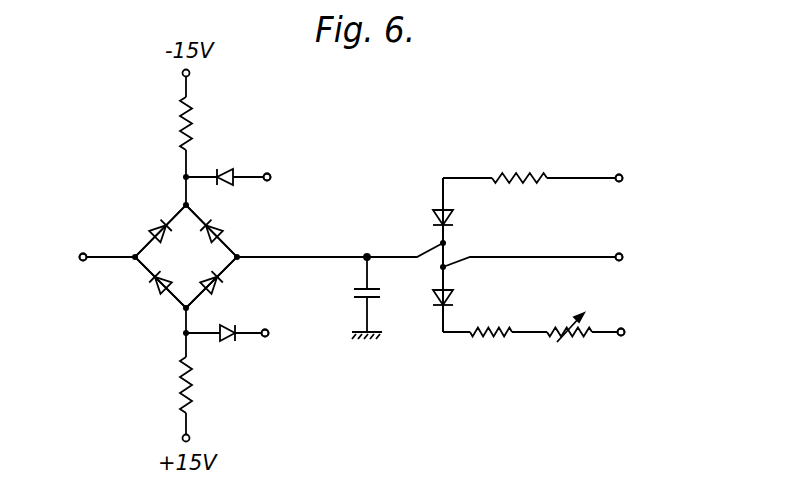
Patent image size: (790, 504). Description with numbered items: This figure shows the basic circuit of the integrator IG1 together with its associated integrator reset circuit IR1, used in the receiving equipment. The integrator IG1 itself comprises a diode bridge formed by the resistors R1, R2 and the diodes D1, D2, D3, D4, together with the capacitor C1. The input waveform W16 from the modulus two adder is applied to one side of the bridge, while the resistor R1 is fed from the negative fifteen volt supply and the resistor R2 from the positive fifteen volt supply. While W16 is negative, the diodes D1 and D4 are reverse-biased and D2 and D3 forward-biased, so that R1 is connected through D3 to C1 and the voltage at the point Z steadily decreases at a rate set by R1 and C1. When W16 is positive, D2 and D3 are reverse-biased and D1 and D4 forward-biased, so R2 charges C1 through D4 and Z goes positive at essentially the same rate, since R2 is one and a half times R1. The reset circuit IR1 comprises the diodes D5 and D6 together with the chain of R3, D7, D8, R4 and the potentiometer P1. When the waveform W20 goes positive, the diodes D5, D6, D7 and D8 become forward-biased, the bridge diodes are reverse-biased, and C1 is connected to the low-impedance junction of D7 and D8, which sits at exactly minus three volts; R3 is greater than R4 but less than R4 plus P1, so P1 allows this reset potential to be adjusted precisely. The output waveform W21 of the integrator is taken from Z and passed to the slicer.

The resistor R1 is at (204, 123).
The resistor R2 is at (203, 388).
The resistor R3 is at (519, 163).
The resistor R4 is at (491, 349).
The potentiometer P1 is at (569, 341).
The capacitor C1 is at (354, 310).
The point Z is at (357, 245).
The diode D1 is at (146, 224).
The diode D2 is at (146, 290).
The diode D3 is at (229, 225).
The diode D4 is at (227, 291).
The diode D5 is at (225, 159).
The diode D6 is at (226, 347).
The diode D7 is at (462, 223).
The diode D8 is at (462, 295).
The integrator IG1 is at (157, 220).
The integrator reset circuit IR1 is at (450, 232).
The output signal of modulus two adder W16 is at (88, 269).
The reset waveform W20 is at (673, 340).
The output waveform of integrator W21 is at (574, 251).